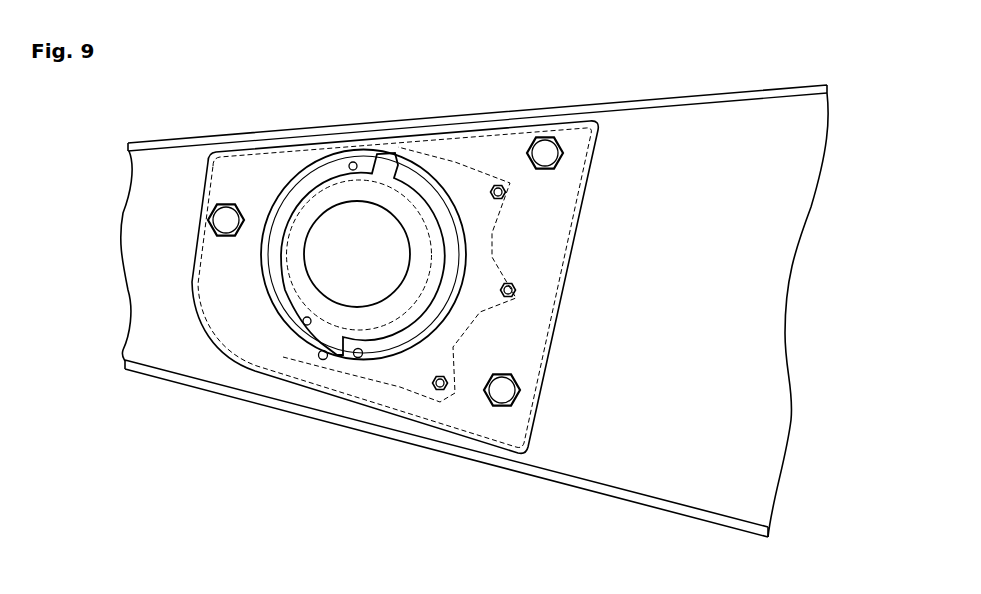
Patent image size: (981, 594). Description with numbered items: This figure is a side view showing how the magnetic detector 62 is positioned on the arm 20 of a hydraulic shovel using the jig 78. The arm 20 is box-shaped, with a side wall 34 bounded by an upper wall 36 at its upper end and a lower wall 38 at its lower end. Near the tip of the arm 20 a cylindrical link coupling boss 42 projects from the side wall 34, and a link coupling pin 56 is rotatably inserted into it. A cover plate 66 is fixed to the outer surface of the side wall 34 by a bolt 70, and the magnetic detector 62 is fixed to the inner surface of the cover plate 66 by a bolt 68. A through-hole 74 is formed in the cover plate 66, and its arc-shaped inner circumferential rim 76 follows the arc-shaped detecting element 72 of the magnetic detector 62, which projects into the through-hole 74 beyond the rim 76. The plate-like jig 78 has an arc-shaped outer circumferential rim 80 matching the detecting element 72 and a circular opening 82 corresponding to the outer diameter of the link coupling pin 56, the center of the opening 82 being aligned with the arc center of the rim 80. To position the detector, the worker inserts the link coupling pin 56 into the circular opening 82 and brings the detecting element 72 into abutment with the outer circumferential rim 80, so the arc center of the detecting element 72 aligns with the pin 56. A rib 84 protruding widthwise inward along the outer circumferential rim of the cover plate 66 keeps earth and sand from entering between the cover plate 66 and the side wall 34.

The arm 20 is at (766, 87).
The side wall 34 is at (685, 145).
The upper wall 36 is at (648, 100).
The lower wall 38 is at (610, 497).
The link coupling boss 42 is at (332, 198).
The link coupling pin 56 is at (327, 253).
The magnetic detector 62 is at (390, 375).
The cover plate 66 is at (239, 344).
The bolt 68 is at (443, 374).
The bolt 70 is at (218, 219).
The arc-shaped detecting element 72 is at (344, 356).
The through-hole 74 is at (304, 325).
The arc-shaped inner circumferential rim 76 is at (318, 345).
The jig 78 is at (354, 162).
The arc-shaped outer circumferential rim 80 is at (402, 346).
The circular opening 82 is at (308, 268).
The rib 84 is at (538, 422).